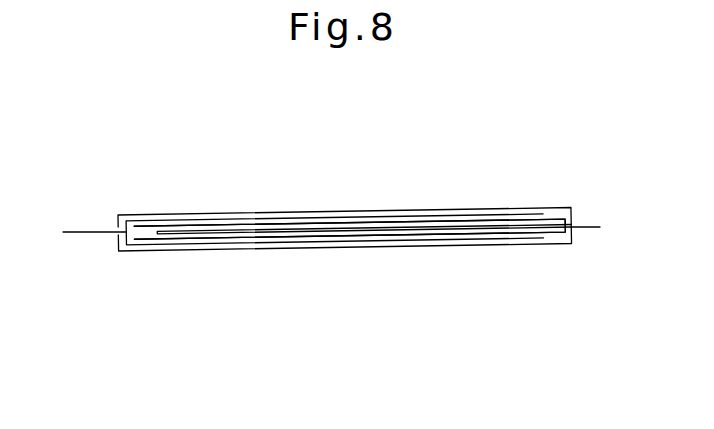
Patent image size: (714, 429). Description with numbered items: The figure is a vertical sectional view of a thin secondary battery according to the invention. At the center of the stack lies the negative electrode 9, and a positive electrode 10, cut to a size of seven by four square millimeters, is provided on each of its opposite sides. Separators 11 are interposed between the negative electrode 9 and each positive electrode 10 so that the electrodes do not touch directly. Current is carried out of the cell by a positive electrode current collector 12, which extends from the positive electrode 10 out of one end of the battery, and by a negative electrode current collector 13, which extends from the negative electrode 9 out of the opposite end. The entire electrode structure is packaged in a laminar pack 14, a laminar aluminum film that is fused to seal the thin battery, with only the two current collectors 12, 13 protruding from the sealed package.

The negative electrode 9 is at (168, 230).
The positive electrode 10 is at (203, 225).
The separators 11 is at (282, 226).
The positive electrode current collector 12 is at (88, 232).
The negative electrode current collector 13 is at (581, 224).
The laminar pack 14 is at (503, 210).